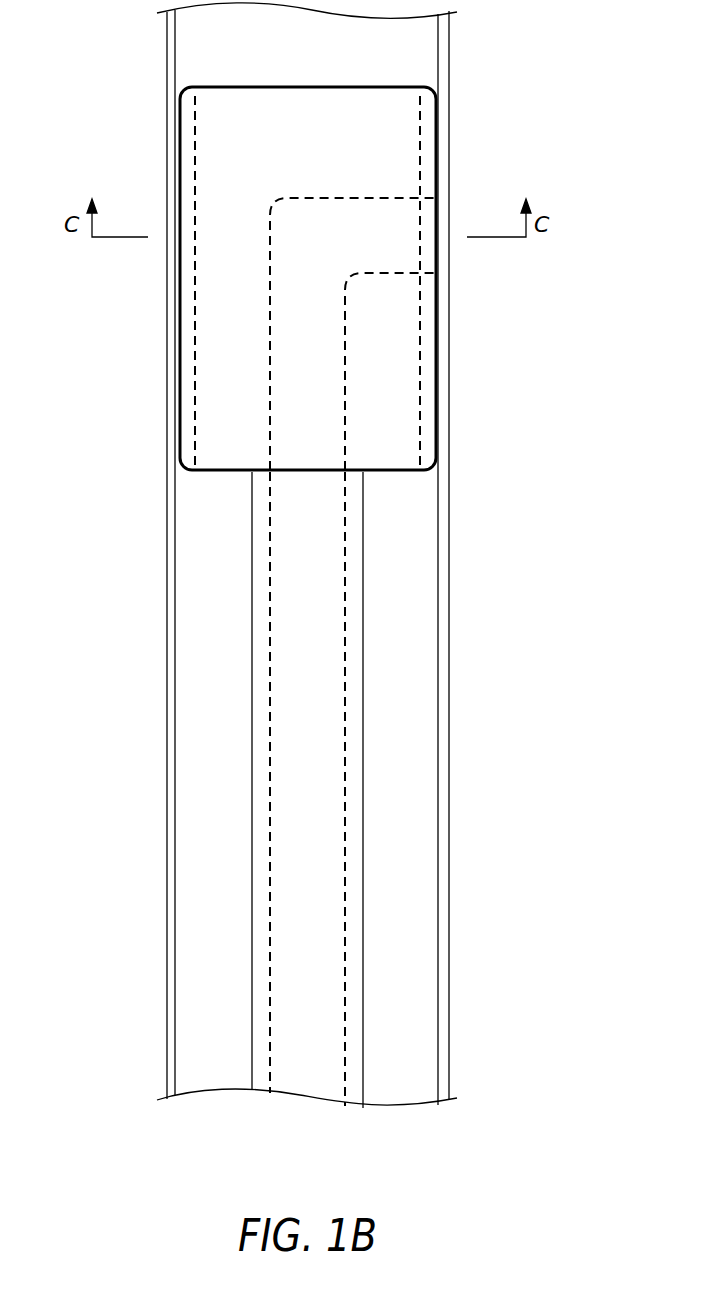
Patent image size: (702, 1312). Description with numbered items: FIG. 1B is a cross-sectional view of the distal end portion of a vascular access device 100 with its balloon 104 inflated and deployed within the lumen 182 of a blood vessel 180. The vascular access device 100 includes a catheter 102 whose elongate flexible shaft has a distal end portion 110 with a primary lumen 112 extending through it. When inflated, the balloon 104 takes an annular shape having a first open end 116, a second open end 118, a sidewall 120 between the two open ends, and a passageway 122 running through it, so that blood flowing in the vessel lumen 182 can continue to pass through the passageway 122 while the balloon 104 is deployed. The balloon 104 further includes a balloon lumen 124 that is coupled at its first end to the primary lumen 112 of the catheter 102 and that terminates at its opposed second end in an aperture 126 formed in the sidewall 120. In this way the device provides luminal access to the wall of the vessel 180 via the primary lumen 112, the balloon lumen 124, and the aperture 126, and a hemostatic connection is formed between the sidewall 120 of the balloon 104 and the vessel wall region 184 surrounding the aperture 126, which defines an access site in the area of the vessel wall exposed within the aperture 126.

The vascular access device 100 is at (412, 528).
The catheter 102 is at (363, 728).
The balloon 104 is at (250, 105).
The distal end portion 110 is at (223, 528).
The primary lumen 112 is at (288, 855).
The first open end 116 is at (223, 482).
The second open end 118 is at (378, 76).
The sidewall 120 is at (440, 320).
The passageway 122 is at (223, 340).
The balloon lumen 124 is at (332, 385).
The aperture 126 is at (436, 215).
The blood vessel 180 is at (448, 850).
The lumen 182 is at (420, 40).
The vessel wall region 184 is at (443, 137).